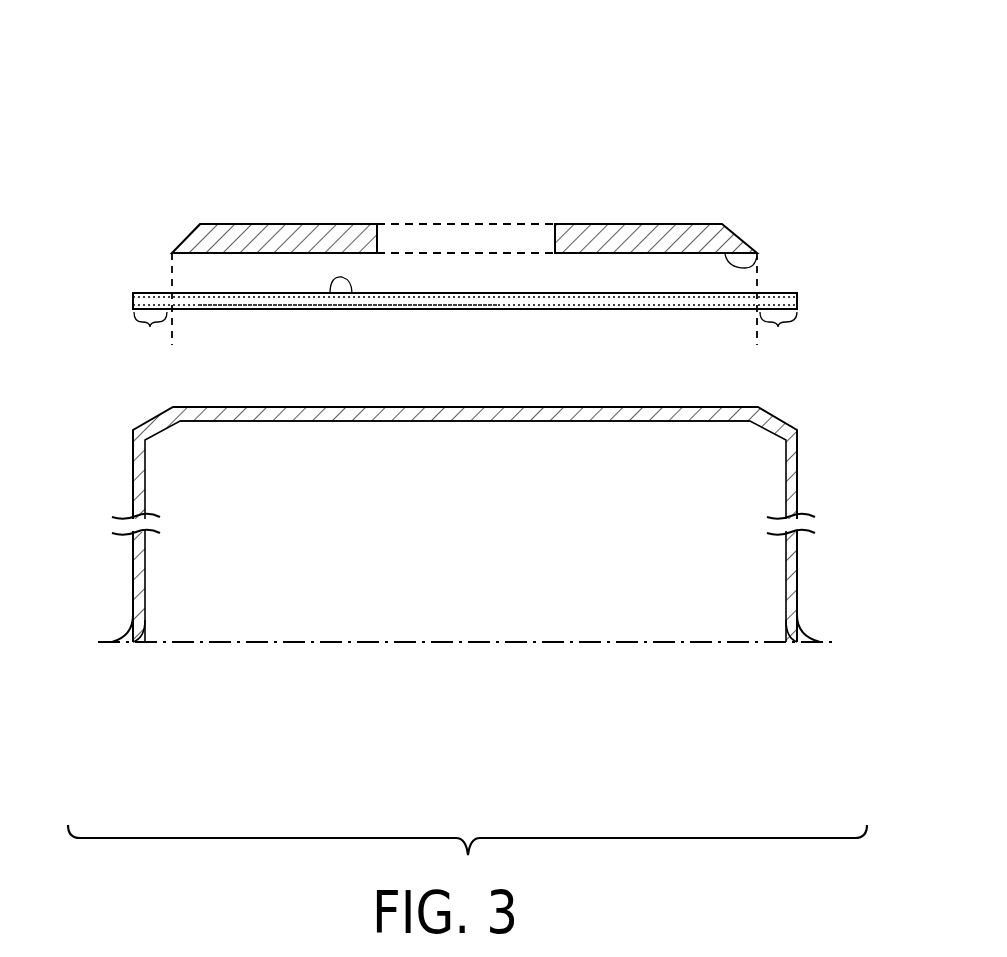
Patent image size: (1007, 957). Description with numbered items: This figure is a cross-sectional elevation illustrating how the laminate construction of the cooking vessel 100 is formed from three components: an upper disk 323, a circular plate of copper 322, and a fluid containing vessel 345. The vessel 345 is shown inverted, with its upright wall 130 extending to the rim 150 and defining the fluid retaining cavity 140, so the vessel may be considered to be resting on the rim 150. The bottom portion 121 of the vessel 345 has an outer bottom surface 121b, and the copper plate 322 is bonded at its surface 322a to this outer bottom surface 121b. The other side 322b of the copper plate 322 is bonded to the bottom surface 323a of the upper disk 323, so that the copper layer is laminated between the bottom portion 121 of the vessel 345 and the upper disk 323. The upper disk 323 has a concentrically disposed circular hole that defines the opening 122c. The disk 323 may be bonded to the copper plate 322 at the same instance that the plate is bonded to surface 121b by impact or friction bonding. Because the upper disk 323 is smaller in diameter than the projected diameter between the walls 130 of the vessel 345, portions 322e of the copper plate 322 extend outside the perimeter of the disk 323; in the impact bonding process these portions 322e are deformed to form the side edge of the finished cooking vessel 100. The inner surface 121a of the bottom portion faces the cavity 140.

The cooking vessel 100 is at (566, 96).
The bottom portion 121 is at (485, 415).
The inner surface of shield member 121a is at (565, 422).
The outer bottom surface 121b is at (652, 407).
The opening 122c is at (468, 224).
The upright wall 130 is at (130, 470).
The fluid retaining cavity 140 is at (455, 618).
The rim 150 is at (133, 646).
The circular plate of copper 322 is at (156, 293).
The surface 322a is at (289, 310).
The other side 322b is at (353, 309).
The portions 322e is at (150, 327).
The upper disk 323 is at (650, 224).
The bottom surface 323a is at (752, 264).
The fluid containing vessel 345 is at (734, 671).